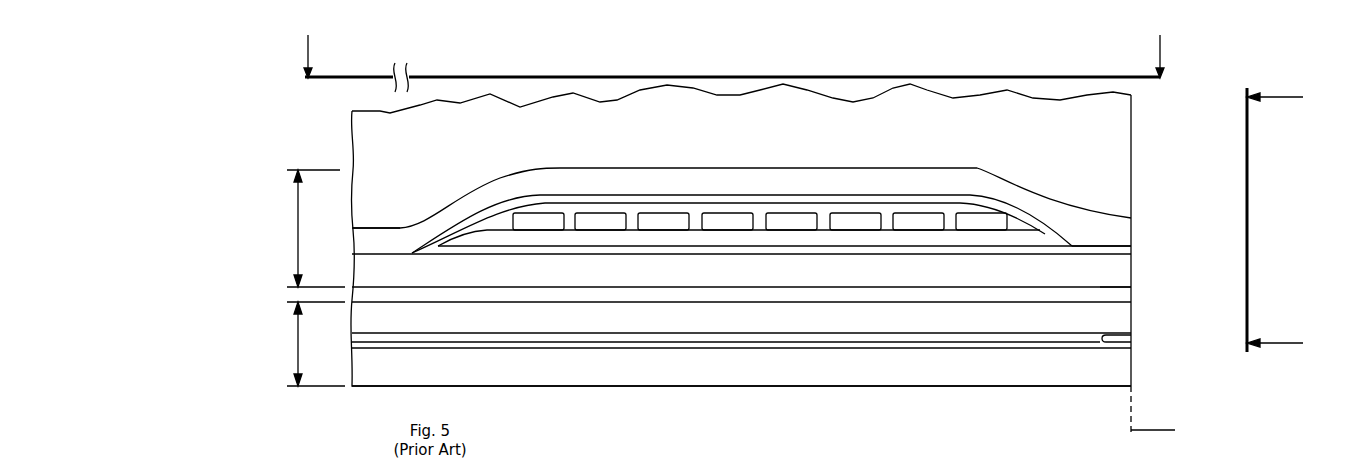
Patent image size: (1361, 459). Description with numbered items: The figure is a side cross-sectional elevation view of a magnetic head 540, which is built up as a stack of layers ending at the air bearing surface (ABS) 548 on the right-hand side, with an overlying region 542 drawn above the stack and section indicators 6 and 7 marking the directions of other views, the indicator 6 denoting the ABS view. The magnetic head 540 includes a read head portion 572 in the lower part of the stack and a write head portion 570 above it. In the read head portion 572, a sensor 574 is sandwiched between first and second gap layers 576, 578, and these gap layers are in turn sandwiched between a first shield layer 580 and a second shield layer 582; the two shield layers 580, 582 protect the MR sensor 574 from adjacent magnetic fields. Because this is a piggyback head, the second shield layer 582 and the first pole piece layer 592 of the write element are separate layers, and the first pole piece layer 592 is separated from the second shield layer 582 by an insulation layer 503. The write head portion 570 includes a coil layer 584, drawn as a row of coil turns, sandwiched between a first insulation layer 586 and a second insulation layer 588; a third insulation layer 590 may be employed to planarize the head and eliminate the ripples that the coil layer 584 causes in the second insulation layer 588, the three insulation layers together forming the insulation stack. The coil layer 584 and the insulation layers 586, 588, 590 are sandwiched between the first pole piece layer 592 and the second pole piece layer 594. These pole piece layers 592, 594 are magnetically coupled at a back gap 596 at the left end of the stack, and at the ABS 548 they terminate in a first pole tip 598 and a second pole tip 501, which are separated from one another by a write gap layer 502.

The magnetic head 540 is at (330, 122).
The overcoat layer 542 is at (1117, 123).
The air bearing surface (ABS) 548 is at (1197, 267).
The write head portion 570 is at (298, 232).
The read head portion 572 is at (298, 348).
The sensor 574 is at (1131, 338).
The first gap layer 576 is at (807, 347).
The second gap layer 578 is at (778, 333).
The first shield layer 580 is at (930, 372).
The second shield layer 582 is at (992, 318).
The coil layer 584 is at (790, 218).
The first insulation layer 586 is at (712, 240).
The second insulation layer 588 is at (1022, 223).
The third insulation layer 590 is at (575, 197).
The first pole piece layer 592 is at (1053, 277).
The second pole piece layer 594 is at (918, 178).
The back gap 596 is at (380, 227).
The first pole tip 598 is at (1131, 272).
The second pole tip 501 is at (1125, 230).
The write gap layer 502 is at (1128, 250).
The insulation layer 503 is at (630, 297).
The section line 6- 6 is at (1286, 220).
The section line 7- 7 is at (735, 62).